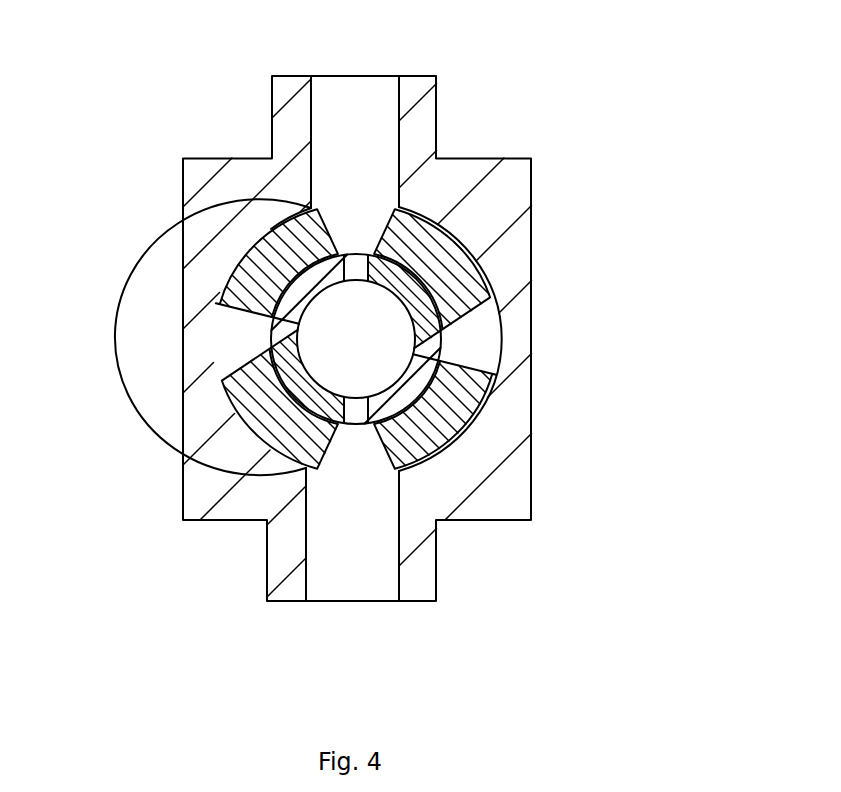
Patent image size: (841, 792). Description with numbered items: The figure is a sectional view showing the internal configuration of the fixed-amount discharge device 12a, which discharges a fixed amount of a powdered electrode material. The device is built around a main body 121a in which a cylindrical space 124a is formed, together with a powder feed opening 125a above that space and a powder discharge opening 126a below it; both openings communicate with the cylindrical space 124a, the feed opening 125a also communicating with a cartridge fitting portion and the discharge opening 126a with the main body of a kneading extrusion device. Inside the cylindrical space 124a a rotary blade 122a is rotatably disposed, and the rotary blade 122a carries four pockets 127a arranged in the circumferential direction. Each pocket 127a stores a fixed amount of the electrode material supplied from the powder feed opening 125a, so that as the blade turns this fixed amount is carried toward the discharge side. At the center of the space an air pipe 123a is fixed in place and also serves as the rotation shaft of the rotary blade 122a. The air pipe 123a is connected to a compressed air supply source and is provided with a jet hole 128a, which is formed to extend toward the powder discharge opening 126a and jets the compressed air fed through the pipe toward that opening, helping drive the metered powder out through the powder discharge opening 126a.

The fixed-amount discharge device 12a is at (604, 134).
The main body 121a is at (531, 248).
The rotary blade 122a is at (455, 293).
The air pipe 123a is at (465, 412).
The cylindrical space 124a is at (247, 333).
The powder feed opening 125a is at (348, 103).
The powder discharge opening 126a is at (345, 580).
The pocket 127a is at (336, 238).
The jet hole 128a is at (344, 424).